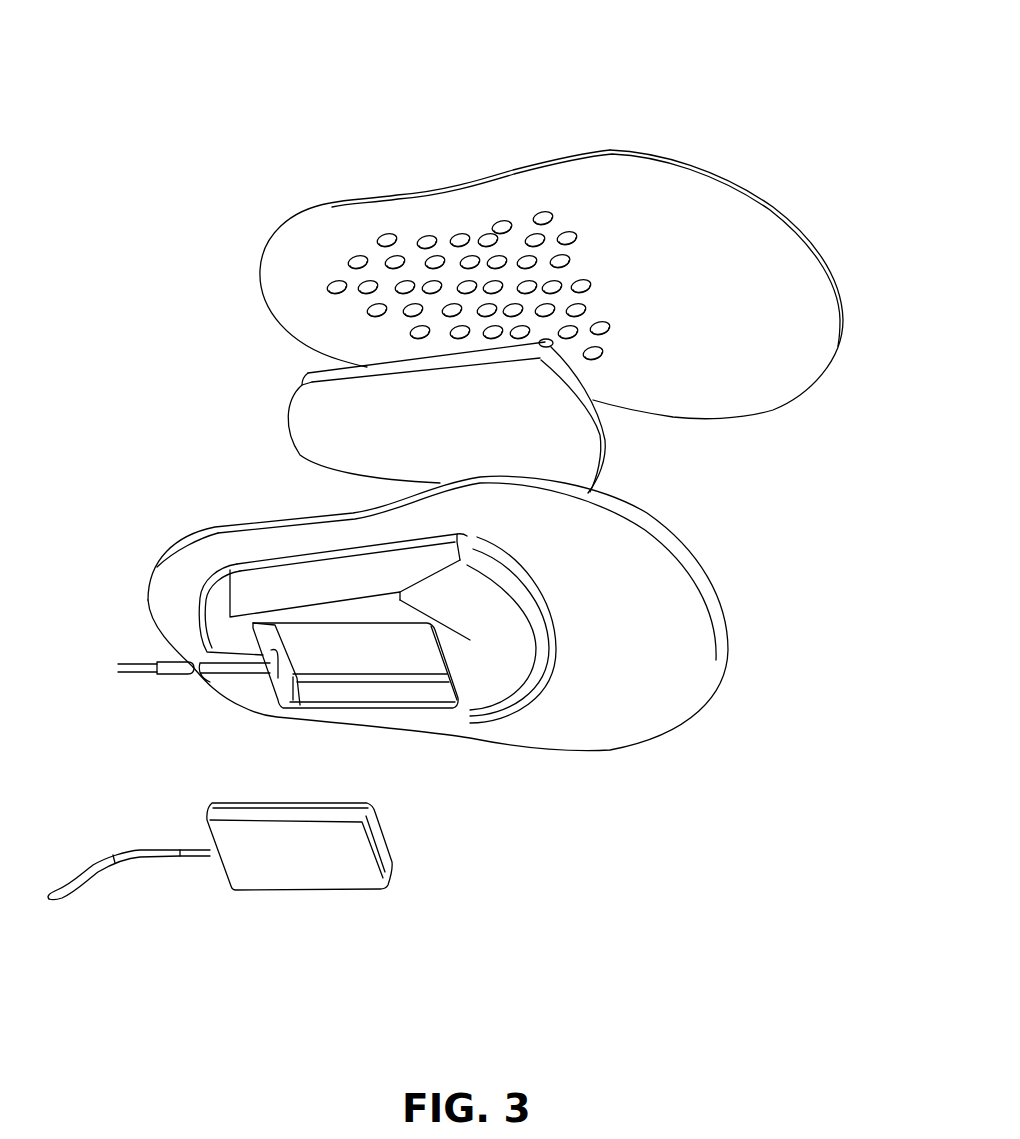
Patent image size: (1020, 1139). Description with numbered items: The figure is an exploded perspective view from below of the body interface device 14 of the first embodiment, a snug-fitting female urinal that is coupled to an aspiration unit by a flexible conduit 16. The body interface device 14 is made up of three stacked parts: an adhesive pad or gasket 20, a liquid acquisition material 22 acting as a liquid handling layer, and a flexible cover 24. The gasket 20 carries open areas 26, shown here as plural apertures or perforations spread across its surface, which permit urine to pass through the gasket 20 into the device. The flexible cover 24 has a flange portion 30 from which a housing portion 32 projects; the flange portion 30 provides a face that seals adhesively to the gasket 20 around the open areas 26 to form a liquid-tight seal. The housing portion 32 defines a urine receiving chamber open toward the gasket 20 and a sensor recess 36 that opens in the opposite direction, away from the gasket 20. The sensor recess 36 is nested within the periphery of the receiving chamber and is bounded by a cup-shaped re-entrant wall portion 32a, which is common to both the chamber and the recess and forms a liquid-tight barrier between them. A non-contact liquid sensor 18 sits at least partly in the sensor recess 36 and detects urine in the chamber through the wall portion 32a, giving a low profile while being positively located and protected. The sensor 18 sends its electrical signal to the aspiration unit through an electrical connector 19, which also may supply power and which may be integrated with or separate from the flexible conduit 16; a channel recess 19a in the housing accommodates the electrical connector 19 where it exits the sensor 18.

The body interface device 14 is at (286, 53).
The adhesive pad 20 is at (622, 148).
The open areas 26 is at (462, 262).
The liquid acquisition material 22 is at (308, 375).
The flexible cover 24 is at (159, 478).
The flange portion 30 is at (643, 562).
The housing portion 32 is at (411, 711).
The wall portion 32a is at (345, 650).
The sensor recess 36 is at (383, 690).
The flexible conduit 16 is at (130, 668).
The channel recess 19a is at (223, 657).
The liquid sensor 18 is at (368, 885).
The electrical connector 19 is at (73, 893).